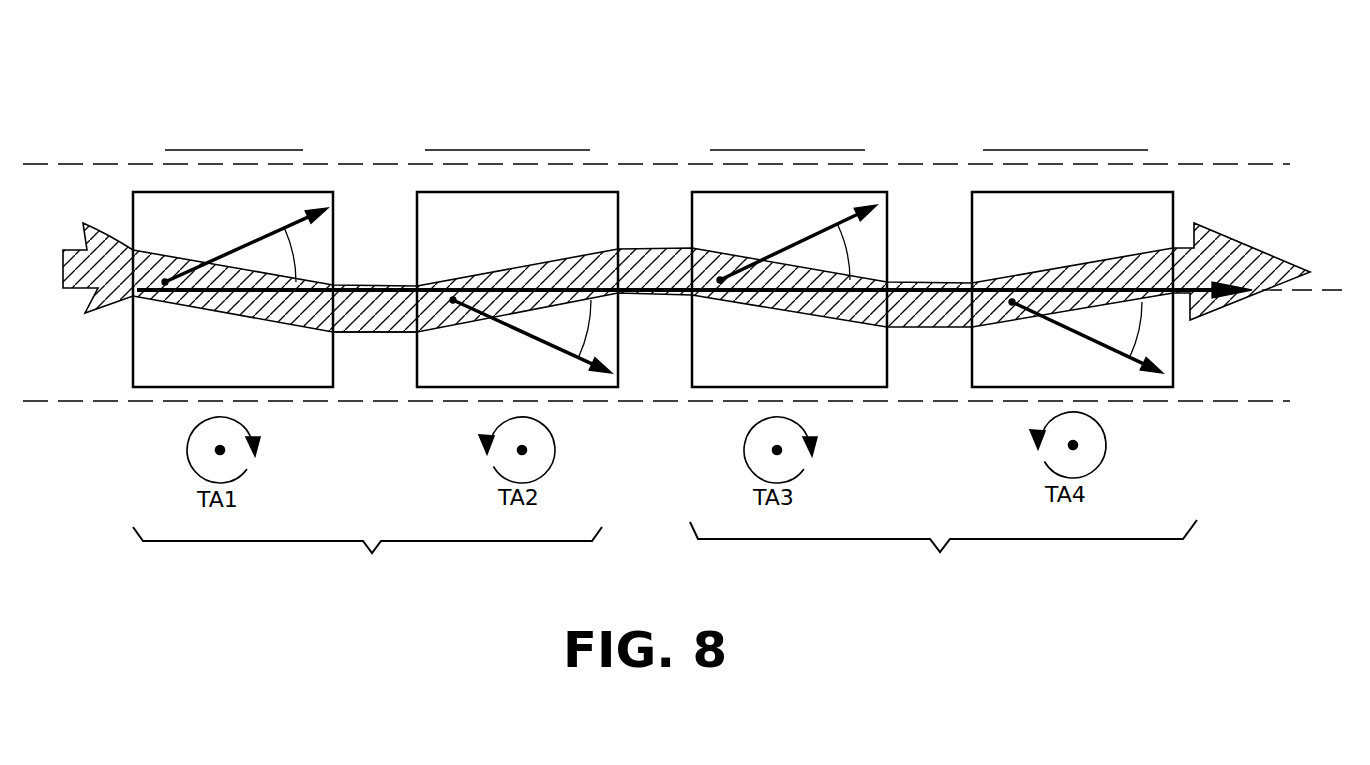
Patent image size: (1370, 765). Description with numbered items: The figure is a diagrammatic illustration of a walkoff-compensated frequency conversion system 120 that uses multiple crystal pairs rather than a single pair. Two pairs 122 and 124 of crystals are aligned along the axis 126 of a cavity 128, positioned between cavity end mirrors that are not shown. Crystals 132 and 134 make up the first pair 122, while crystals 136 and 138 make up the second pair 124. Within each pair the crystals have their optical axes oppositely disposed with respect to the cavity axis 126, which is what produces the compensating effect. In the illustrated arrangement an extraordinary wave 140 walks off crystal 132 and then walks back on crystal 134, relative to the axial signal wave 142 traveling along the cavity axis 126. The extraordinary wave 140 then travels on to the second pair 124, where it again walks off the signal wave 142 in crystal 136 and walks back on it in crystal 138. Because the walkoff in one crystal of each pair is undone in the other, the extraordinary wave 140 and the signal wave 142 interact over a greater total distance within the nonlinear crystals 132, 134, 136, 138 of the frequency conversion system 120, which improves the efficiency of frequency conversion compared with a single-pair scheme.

The frequency conversion system 120 is at (948, 108).
The first pair of crystals 122 is at (367, 559).
The second pair of crystals 124 is at (943, 554).
The cavity axis 126 is at (1335, 292).
The cavity 128 is at (643, 164).
The crystal 132 is at (318, 192).
The crystal 134 is at (418, 192).
The crystal 136 is at (868, 192).
The crystal 138 is at (1160, 192).
The extraordinary wave 140 is at (67, 290).
The axial signal wave 142 is at (383, 300).